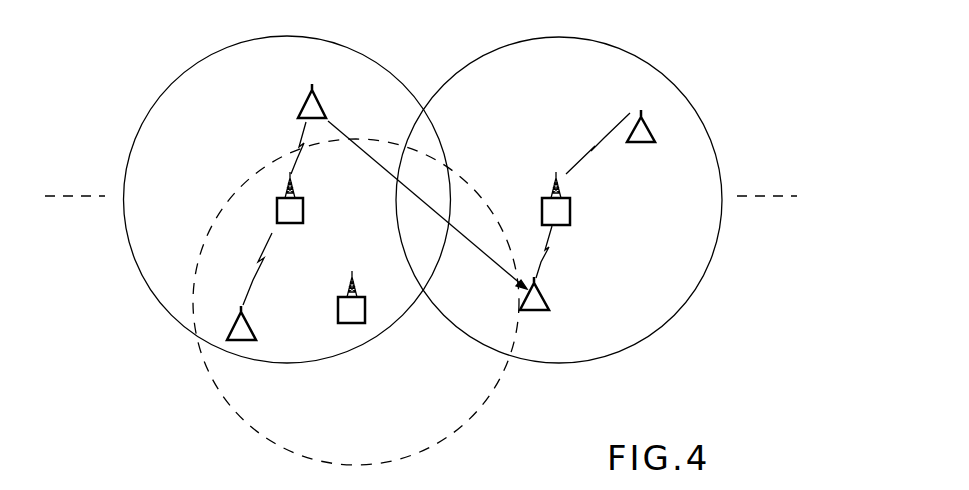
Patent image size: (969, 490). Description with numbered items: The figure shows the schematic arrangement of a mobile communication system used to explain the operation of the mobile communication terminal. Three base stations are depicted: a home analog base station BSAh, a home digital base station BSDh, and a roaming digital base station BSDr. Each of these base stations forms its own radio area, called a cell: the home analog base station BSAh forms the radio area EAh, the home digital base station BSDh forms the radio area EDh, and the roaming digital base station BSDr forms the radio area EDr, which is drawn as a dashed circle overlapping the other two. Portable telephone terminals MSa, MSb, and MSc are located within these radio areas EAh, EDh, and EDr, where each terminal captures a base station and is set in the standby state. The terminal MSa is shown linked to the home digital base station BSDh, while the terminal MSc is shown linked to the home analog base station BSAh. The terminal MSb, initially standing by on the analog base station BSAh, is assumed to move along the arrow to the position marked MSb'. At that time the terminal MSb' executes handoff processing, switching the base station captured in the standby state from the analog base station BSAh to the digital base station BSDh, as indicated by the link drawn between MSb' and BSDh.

The radio area of home analog base station EAh is at (213, 53).
The radio area of home digital base station EDh is at (681, 92).
The radio area of roaming digital base station EDr is at (455, 417).
The portable telephone terminal MSb is at (409, 186).
The portable telephone terminal at moved position MSb' is at (558, 293).
The portable telephone terminal MSa is at (643, 139).
The portable telephone terminal MSc is at (259, 323).
The home analog base station BSAh is at (279, 238).
The home digital base station BSDh is at (583, 195).
The roaming digital base station BSDr is at (343, 311).